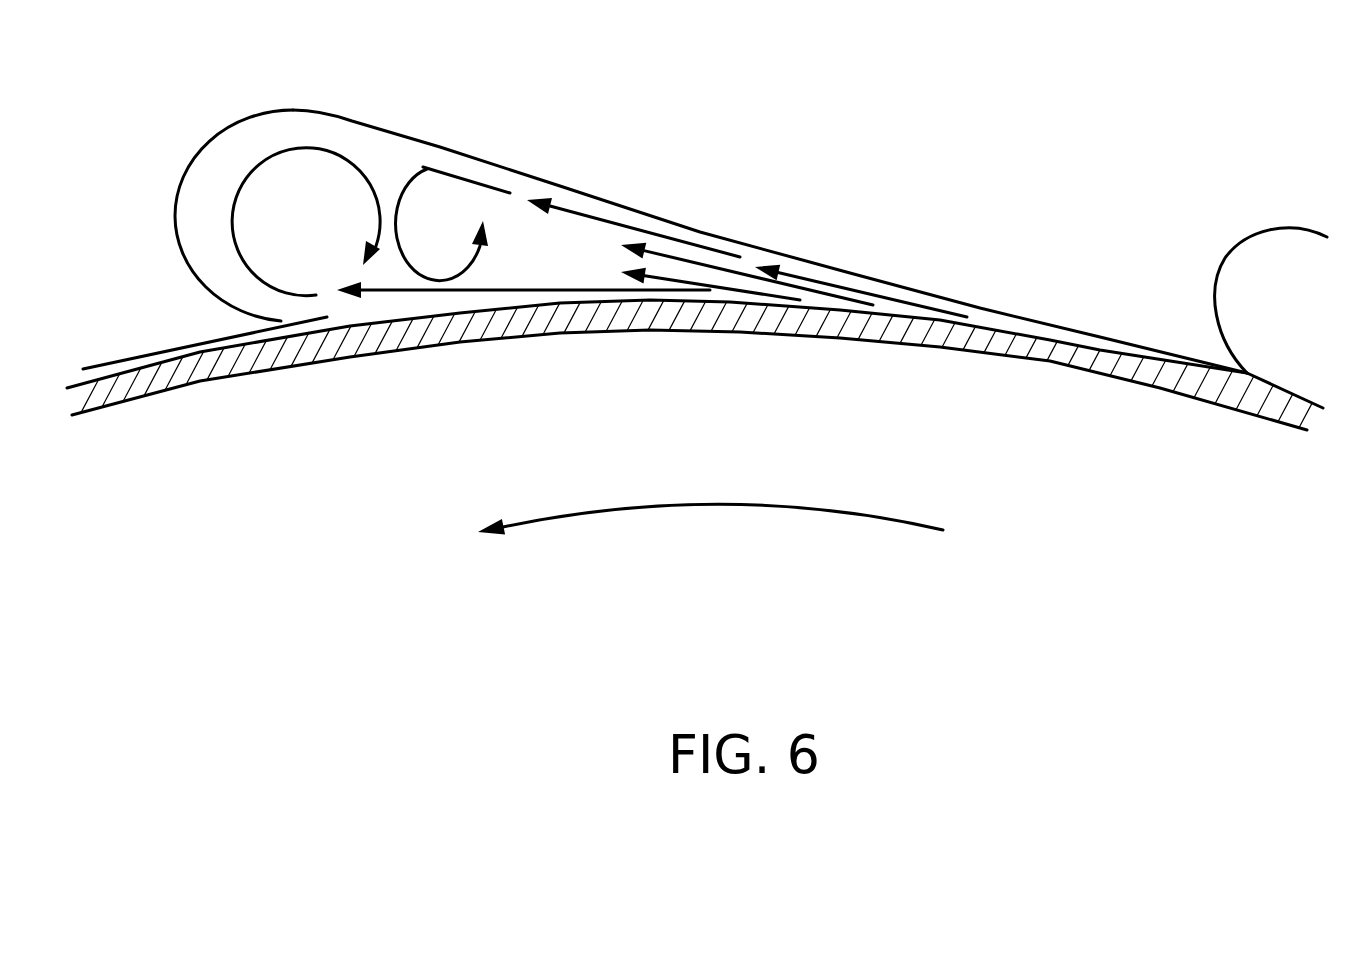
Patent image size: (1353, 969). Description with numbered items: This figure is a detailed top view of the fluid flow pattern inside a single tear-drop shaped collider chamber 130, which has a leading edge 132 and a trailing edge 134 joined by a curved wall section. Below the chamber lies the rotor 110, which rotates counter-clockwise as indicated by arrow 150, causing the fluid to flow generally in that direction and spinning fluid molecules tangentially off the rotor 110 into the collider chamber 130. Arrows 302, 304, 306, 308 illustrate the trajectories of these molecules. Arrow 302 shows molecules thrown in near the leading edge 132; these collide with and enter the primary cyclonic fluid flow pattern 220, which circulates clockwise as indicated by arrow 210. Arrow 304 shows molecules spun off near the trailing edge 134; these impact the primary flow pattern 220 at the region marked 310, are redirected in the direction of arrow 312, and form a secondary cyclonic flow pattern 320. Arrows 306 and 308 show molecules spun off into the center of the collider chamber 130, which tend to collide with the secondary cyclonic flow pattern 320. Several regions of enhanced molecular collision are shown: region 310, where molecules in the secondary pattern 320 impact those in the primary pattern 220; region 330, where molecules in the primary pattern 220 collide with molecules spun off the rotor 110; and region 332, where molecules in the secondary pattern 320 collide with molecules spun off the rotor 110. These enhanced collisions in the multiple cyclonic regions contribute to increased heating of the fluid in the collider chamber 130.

The rotor 110 is at (985, 353).
The collider chamber 130 is at (340, 117).
The leading edge 132 is at (270, 322).
The trailing edge 134 is at (1243, 370).
The arrow 150 is at (758, 505).
The arrow 210 is at (252, 167).
The cyclonic fluid flow pattern 220 is at (343, 236).
The arrow 302 is at (435, 292).
The arrow 304 is at (623, 222).
The arrow 306 is at (692, 285).
The arrow 308 is at (817, 293).
The region of enhanced collision 310 is at (422, 167).
The arrow 312 is at (467, 273).
The secondary cyclonic flow pattern 320 is at (473, 236).
The region of enhanced collision 330 is at (313, 298).
The region of enhanced collision 332 is at (518, 228).